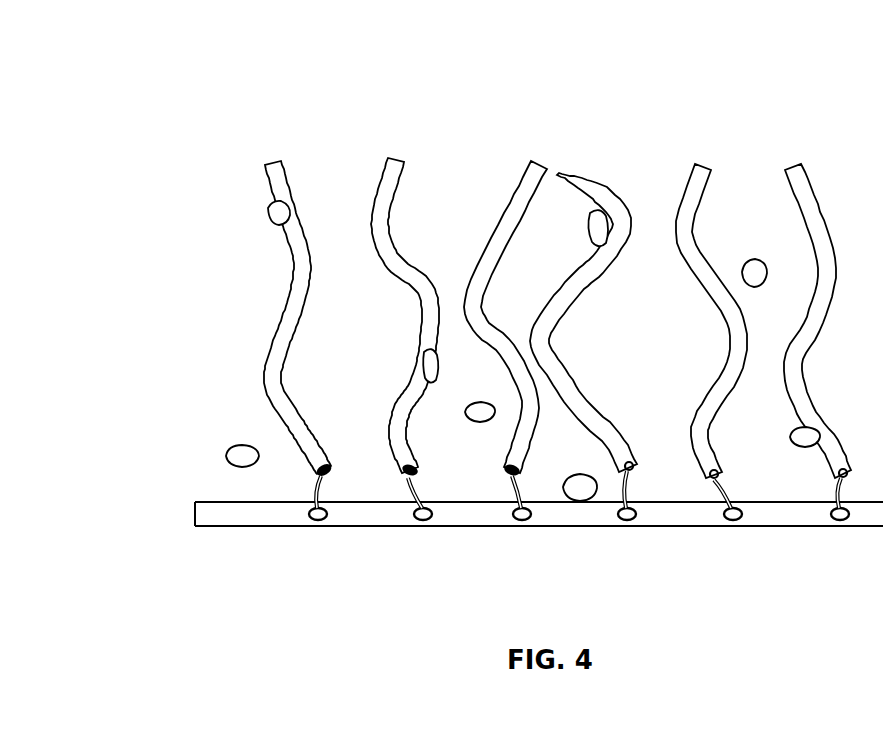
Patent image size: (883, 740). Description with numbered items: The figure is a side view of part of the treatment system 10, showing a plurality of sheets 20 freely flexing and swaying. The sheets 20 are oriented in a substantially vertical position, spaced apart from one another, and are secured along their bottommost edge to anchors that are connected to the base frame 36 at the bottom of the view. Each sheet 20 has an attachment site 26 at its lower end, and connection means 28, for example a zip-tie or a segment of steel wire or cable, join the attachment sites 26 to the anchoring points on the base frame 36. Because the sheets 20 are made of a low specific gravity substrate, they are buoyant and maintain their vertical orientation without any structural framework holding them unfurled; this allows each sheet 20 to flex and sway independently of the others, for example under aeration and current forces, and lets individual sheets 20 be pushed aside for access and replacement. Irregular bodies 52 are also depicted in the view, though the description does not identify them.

The treatment system 10 is at (242, 117).
The sheets 20 is at (795, 178).
The attachment sites 26 is at (407, 475).
The connection means 28 is at (723, 490).
The base frame 36 is at (210, 513).
The particles 52 is at (239, 449).